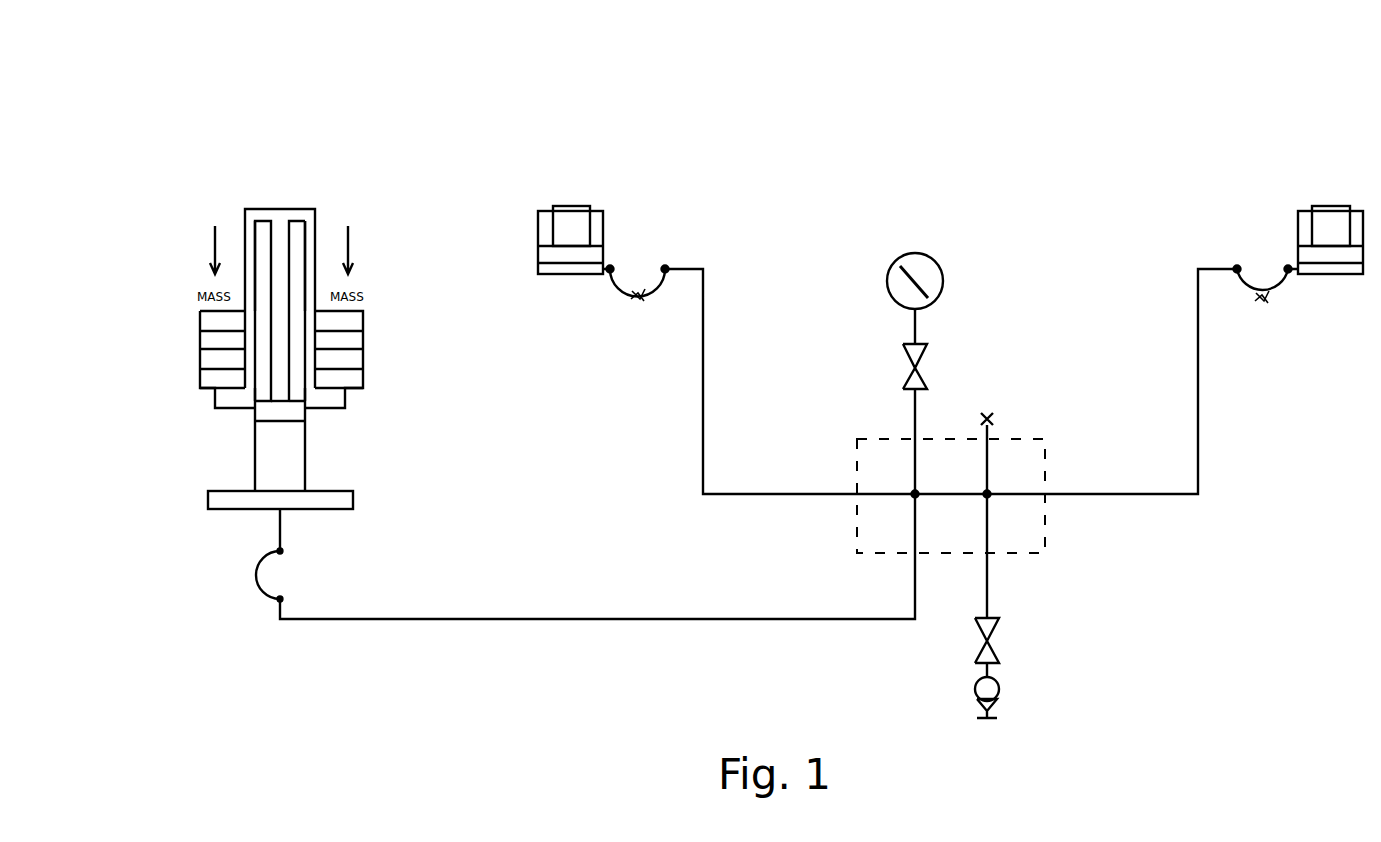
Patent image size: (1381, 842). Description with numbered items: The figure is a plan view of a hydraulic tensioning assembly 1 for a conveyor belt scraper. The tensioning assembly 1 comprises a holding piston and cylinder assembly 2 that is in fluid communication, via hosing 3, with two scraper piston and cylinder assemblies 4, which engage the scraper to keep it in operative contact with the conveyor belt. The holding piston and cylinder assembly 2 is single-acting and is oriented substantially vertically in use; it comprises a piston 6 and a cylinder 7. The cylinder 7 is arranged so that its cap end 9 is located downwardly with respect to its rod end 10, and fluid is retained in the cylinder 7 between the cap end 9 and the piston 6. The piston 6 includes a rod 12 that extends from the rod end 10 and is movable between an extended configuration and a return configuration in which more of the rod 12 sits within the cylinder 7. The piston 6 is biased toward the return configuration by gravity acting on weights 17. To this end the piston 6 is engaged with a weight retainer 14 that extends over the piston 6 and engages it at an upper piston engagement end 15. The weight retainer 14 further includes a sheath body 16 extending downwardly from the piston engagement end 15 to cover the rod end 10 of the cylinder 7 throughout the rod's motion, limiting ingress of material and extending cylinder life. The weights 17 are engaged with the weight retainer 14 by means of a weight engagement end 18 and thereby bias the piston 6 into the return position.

The tensioning assembly 1 is at (202, 201).
The holding piston and cylinder assembly 2 is at (232, 448).
The hosing 3 is at (268, 600).
The scraper piston and cylinder assemblies 4 is at (1308, 218).
The piston 6 is at (298, 222).
The cylinder 7 is at (296, 447).
The cap end 9 is at (302, 499).
The rod end 10 is at (318, 307).
The rod 12 is at (282, 245).
The weight retainer 14 is at (322, 243).
The piston engagement end 15 is at (323, 222).
The sheath body 16 is at (307, 285).
The weights 17 is at (228, 307).
The weight engagement end 18 is at (215, 393).